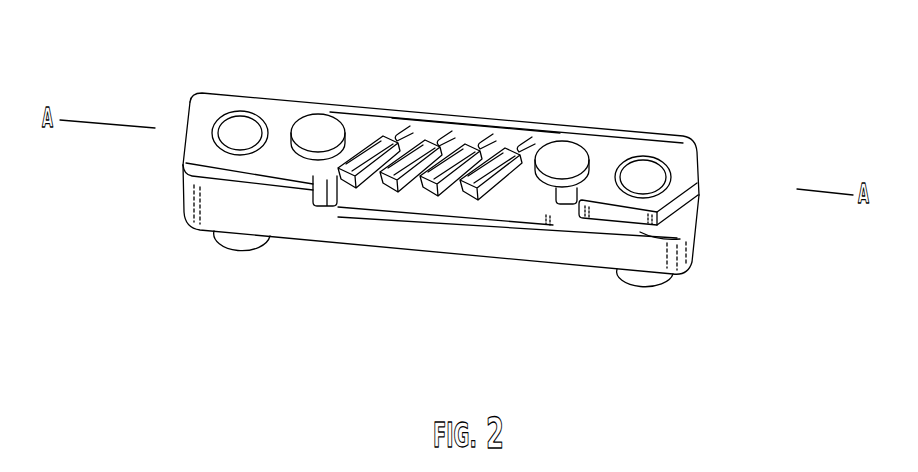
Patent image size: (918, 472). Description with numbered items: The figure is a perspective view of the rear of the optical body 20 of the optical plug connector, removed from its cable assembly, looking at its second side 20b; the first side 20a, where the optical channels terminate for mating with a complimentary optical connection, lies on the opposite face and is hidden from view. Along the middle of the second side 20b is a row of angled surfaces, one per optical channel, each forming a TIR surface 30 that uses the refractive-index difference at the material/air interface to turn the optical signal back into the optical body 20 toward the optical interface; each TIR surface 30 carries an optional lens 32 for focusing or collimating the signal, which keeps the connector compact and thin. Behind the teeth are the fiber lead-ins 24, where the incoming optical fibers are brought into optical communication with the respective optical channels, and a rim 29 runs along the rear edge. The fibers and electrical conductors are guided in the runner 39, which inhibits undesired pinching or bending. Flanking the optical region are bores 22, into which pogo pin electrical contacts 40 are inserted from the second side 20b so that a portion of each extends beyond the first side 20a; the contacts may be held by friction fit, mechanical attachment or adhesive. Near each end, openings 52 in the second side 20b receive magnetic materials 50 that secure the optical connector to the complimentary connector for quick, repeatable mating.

The optical body 20 is at (294, 88).
The first side 20a is at (681, 278).
The second side 20b is at (205, 102).
The bores 22 is at (326, 205).
The fiber lead-ins 24 is at (541, 132).
The rear rim 29 is at (684, 137).
The TIR surface 30 is at (470, 149).
The lens 32 is at (478, 200).
The runner 39 is at (655, 233).
The electrical contacts 40 is at (553, 163).
The magnetic materials 50 is at (248, 130).
The openings 52 is at (213, 145).